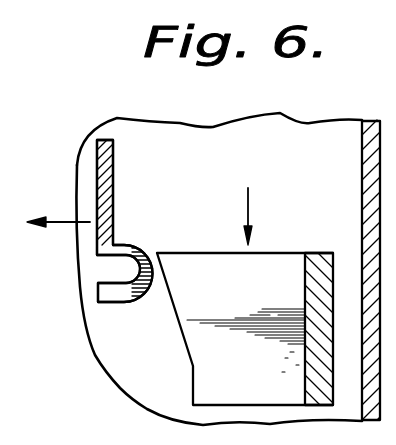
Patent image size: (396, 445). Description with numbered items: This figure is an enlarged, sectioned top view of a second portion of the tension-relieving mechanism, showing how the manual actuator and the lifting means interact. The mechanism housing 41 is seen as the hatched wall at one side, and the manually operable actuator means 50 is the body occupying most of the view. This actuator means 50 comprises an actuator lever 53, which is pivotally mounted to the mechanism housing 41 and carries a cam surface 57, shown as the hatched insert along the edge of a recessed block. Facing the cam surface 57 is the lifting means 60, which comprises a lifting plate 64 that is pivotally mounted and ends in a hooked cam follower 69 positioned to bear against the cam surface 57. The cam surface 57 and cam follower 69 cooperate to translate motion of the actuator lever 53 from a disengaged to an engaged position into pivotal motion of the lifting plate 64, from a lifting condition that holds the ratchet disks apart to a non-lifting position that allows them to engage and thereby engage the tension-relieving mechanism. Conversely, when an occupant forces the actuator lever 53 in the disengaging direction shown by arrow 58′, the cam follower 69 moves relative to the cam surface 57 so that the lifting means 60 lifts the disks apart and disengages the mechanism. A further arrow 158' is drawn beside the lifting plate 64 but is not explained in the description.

The mechanism housing 41 is at (362, 140).
The manually operable actuator means 50 is at (188, 369).
The actuator lever 53 is at (317, 272).
The cam surface 57 is at (170, 318).
The arrow 58′ is at (253, 210).
The lifting means 60 is at (118, 185).
The lifting plate 64 is at (103, 140).
The cam follower 69 is at (162, 283).
The lateral movement arrow 158' is at (52, 249).